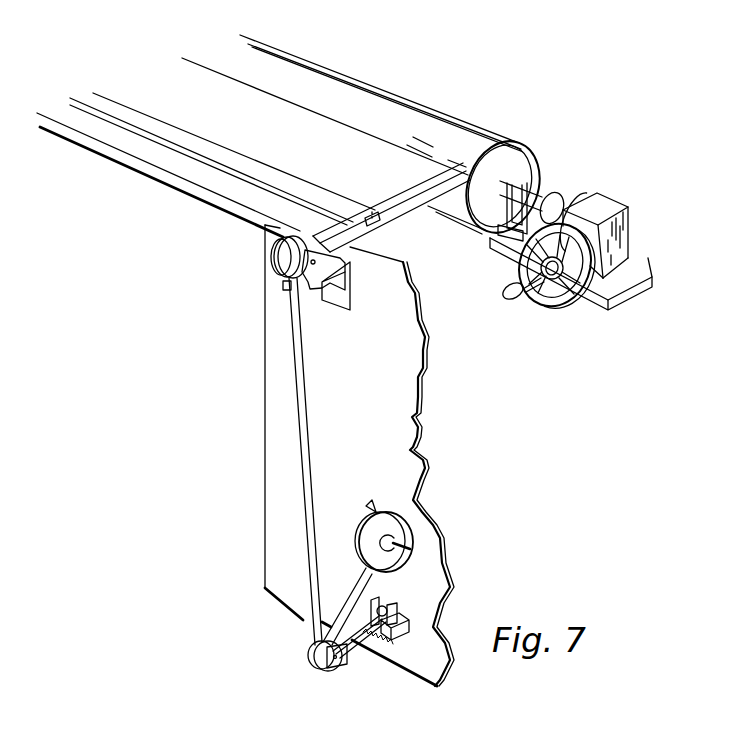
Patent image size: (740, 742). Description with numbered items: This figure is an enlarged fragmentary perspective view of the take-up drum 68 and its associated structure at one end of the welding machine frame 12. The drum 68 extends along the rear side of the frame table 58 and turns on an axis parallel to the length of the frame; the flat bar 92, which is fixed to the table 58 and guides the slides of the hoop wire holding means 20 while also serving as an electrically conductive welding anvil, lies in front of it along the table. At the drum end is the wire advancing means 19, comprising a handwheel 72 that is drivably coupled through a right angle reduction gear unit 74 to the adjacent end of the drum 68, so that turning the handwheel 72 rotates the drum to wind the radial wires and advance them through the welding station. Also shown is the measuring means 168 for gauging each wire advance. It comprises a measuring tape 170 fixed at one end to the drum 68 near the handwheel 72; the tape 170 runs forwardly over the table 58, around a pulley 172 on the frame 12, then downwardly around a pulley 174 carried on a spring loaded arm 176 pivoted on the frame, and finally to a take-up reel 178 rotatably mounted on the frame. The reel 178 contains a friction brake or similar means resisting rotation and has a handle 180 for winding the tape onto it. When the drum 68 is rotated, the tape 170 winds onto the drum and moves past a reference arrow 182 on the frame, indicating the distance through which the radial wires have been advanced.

The frame 12 is at (429, 393).
The wire advancing means 19 is at (583, 231).
The wire holding means 20 is at (358, 74).
The table 58 is at (200, 76).
The take-up drum 68 is at (288, 58).
The handwheel 72 is at (565, 303).
The right angle reduction gear unit 74 is at (625, 238).
The flat bar 92 is at (120, 112).
The measuring means 168 is at (288, 461).
The measuring tape 170 is at (292, 440).
The pulley 172 is at (280, 262).
The pulley 174 is at (316, 656).
The spring loaded arm 176 is at (348, 645).
The take-up reel 178 is at (423, 536).
The handle 180 is at (408, 545).
The reference arrow 182 is at (385, 212).